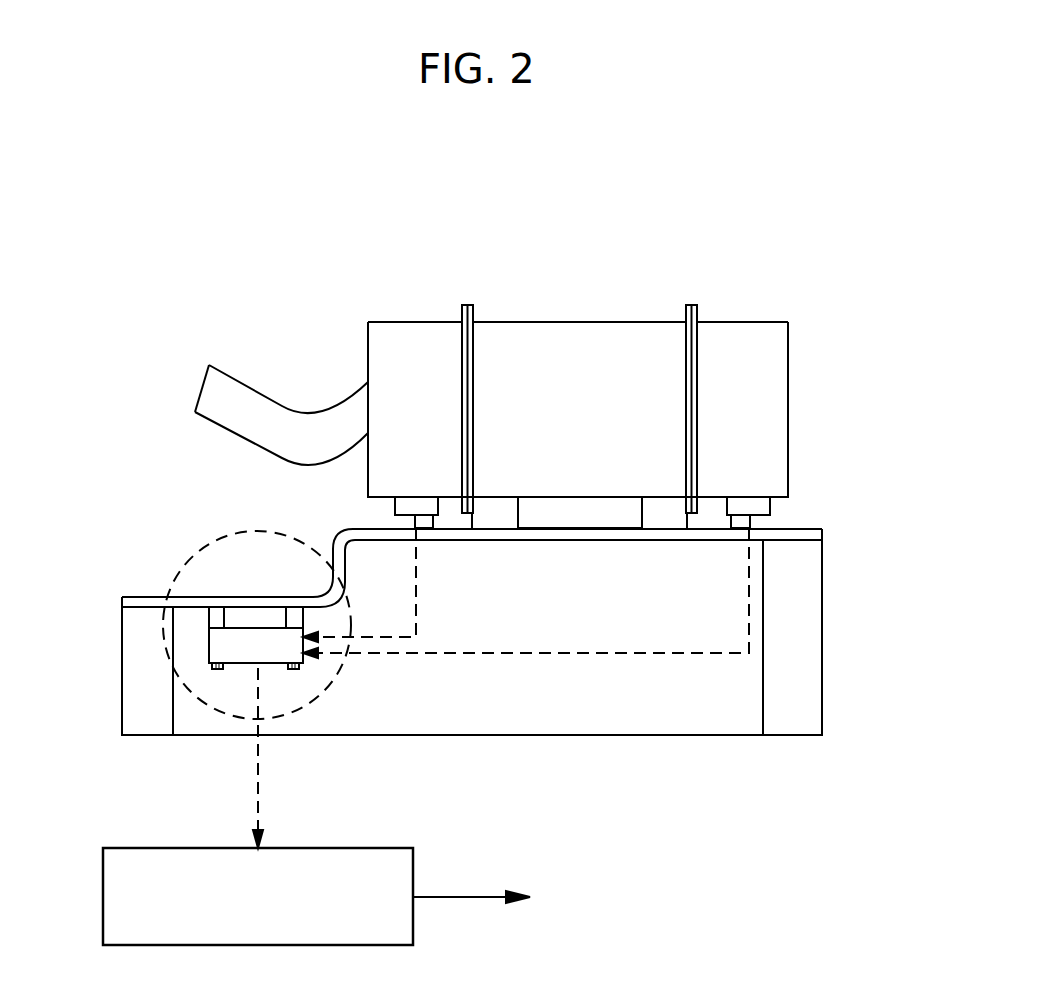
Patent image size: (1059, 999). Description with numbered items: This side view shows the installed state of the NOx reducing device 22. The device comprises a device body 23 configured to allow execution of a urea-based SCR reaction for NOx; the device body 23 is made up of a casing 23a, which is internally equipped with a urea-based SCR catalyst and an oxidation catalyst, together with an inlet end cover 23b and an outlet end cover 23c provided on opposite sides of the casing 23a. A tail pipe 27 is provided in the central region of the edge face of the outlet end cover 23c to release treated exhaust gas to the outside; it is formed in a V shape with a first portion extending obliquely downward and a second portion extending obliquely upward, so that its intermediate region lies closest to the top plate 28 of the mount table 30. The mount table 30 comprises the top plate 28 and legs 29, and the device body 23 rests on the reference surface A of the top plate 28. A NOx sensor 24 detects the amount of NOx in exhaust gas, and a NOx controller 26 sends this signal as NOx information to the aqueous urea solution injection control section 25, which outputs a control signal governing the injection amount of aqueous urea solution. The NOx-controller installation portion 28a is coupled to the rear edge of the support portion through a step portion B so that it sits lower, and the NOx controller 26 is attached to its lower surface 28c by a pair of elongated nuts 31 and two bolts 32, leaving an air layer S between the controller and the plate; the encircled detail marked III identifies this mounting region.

The NOx reducing device 22 is at (630, 363).
The device body 23 is at (578, 363).
The casing 23a is at (583, 327).
The inlet end cover 23b is at (742, 290).
The outlet end cover 23c is at (413, 327).
The NOx sensor 24 is at (428, 528).
The aqueous urea solution injection control section 25 is at (335, 848).
The NOx controller 26 is at (238, 665).
The tail pipe 27 is at (270, 396).
The top plate 28 is at (587, 542).
The NOx-controller installation portion 28a is at (220, 597).
The lower surface 28c is at (143, 608).
The legs 29 is at (122, 664).
The mount table 30 is at (460, 583).
The elongated nuts 31 is at (205, 620).
The bolts 32 is at (212, 669).
The air layer S is at (253, 618).
The reference surface A is at (380, 528).
The step portion B is at (333, 565).
The section III is at (292, 718).